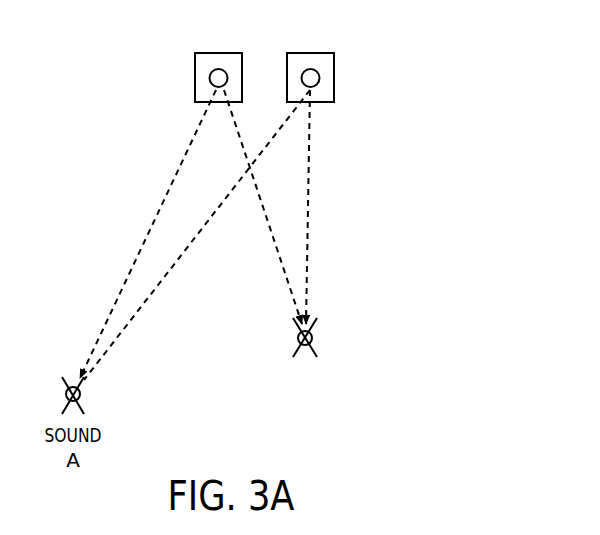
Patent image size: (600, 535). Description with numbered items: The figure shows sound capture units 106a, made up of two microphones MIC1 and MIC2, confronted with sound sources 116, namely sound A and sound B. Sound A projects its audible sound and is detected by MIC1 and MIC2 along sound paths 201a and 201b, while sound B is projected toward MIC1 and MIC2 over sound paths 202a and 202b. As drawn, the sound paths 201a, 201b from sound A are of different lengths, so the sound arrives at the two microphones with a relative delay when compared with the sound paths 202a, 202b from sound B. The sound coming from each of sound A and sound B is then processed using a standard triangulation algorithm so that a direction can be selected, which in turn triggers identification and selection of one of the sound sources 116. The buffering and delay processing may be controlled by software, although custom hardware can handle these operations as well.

The sound capture units 106a is at (392, 18).
The sound sources 116 is at (353, 333).
The sound path 201a is at (139, 251).
The sound path 201b is at (169, 276).
The sound path 202a is at (277, 254).
The sound path 202b is at (309, 249).